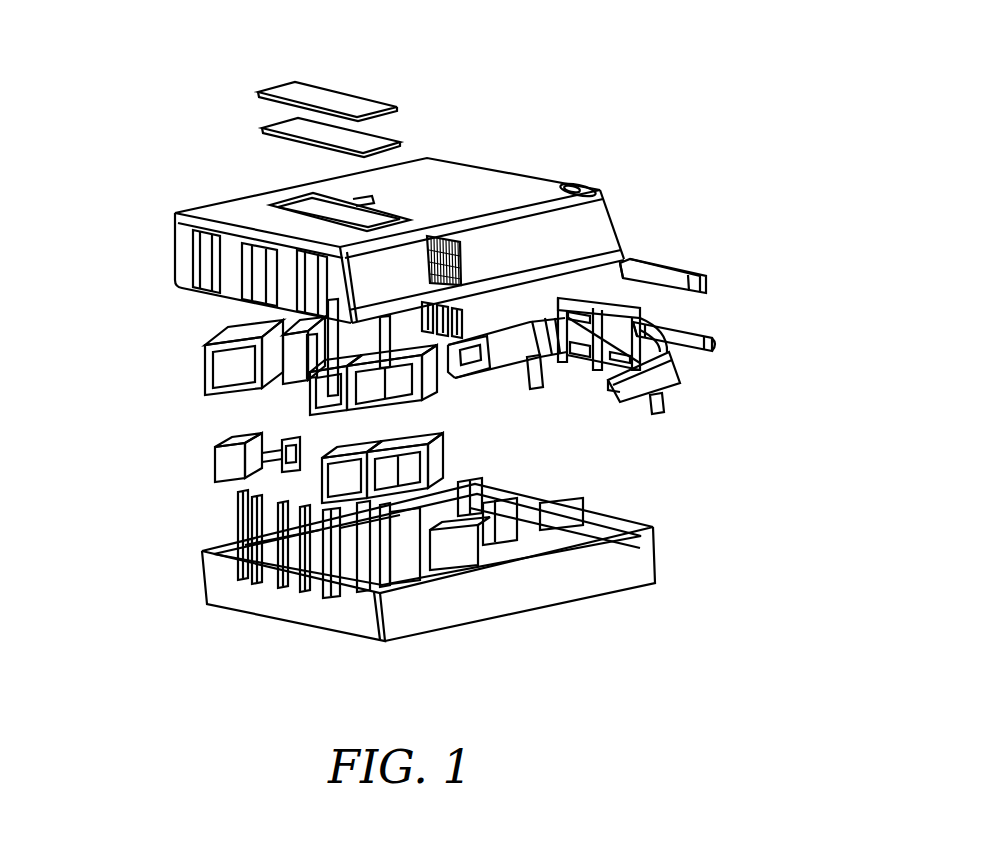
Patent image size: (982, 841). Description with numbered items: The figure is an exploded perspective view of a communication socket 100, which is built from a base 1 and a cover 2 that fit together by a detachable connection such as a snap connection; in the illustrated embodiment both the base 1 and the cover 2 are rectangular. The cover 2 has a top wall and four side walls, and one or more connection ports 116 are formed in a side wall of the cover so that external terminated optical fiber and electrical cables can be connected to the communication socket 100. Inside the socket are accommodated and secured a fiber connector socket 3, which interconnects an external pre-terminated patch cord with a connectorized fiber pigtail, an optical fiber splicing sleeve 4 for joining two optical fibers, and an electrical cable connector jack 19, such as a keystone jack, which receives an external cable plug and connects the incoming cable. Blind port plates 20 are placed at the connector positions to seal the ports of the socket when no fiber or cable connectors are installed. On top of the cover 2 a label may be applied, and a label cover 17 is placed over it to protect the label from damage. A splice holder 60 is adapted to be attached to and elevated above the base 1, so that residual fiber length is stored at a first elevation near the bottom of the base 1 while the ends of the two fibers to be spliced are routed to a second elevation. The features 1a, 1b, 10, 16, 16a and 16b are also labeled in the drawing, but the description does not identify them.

The communication socket 100 is at (673, 137).
The base 1 is at (207, 607).
The front side wall of base 1a is at (577, 602).
The right side wall of base 1b is at (622, 567).
The cover 2 is at (572, 173).
The fiber connector socket 3 is at (340, 466).
The optical fiber splicing sleeve 4 is at (708, 336).
The label plate 10 is at (296, 121).
The cover body 16 is at (430, 188).
The top wall of cover 16a is at (232, 208).
The front wall of cover 16b is at (182, 243).
The connection ports 116 is at (200, 267).
The label cover 17 is at (337, 105).
The electrical cable connector jack 19 is at (213, 350).
The blind port plates 20 is at (232, 461).
The splice holder 60 is at (668, 405).